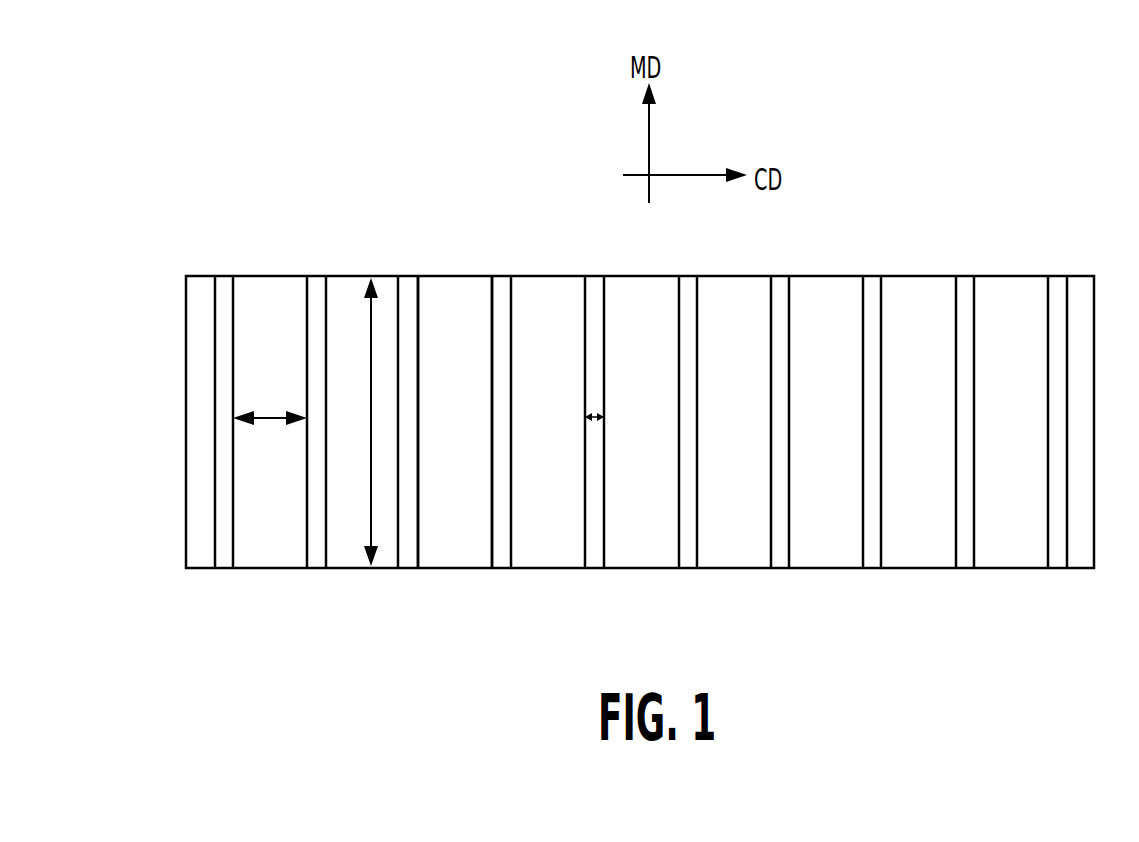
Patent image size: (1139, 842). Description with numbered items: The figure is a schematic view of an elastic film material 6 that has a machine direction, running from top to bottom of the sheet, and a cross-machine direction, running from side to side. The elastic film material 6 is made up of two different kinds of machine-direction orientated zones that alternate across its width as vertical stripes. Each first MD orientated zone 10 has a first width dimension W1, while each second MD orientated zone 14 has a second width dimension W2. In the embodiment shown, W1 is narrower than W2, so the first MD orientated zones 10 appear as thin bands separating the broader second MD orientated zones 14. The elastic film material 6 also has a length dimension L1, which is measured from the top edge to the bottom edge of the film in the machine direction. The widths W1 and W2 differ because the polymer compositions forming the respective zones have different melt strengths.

The elastic film material 6 is at (186, 330).
The second MD orientated zone 14 is at (460, 298).
The first MD orientated zone 10 is at (503, 557).
The length dimension L1 is at (360, 422).
The first width dimension W1 is at (593, 412).
The second width dimension W2 is at (270, 395).